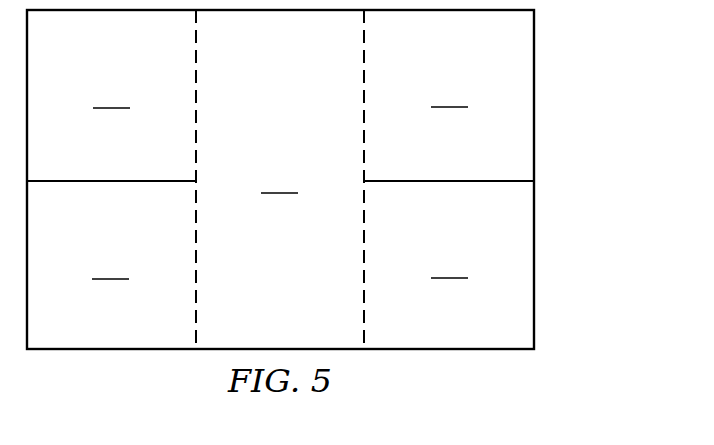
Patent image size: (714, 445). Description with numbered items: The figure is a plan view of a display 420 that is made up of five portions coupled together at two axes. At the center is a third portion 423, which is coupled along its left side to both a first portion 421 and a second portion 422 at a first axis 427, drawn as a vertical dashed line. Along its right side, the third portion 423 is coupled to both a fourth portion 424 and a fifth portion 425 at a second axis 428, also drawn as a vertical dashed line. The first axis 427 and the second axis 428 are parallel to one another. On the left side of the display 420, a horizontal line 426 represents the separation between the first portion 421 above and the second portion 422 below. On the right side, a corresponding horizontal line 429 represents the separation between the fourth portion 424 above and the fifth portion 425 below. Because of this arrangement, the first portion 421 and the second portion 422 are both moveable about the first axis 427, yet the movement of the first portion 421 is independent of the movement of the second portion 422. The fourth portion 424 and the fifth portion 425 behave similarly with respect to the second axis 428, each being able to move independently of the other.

The display 420 is at (548, 72).
The first portion 421 is at (111, 95).
The second portion 422 is at (110, 265).
The third portion 423 is at (279, 179).
The fourth portion 424 is at (449, 93).
The fifth portion 425 is at (449, 265).
The line 426 is at (111, 179).
The first axis 427 is at (197, 90).
The second axis 428 is at (363, 268).
The line 429 is at (450, 179).